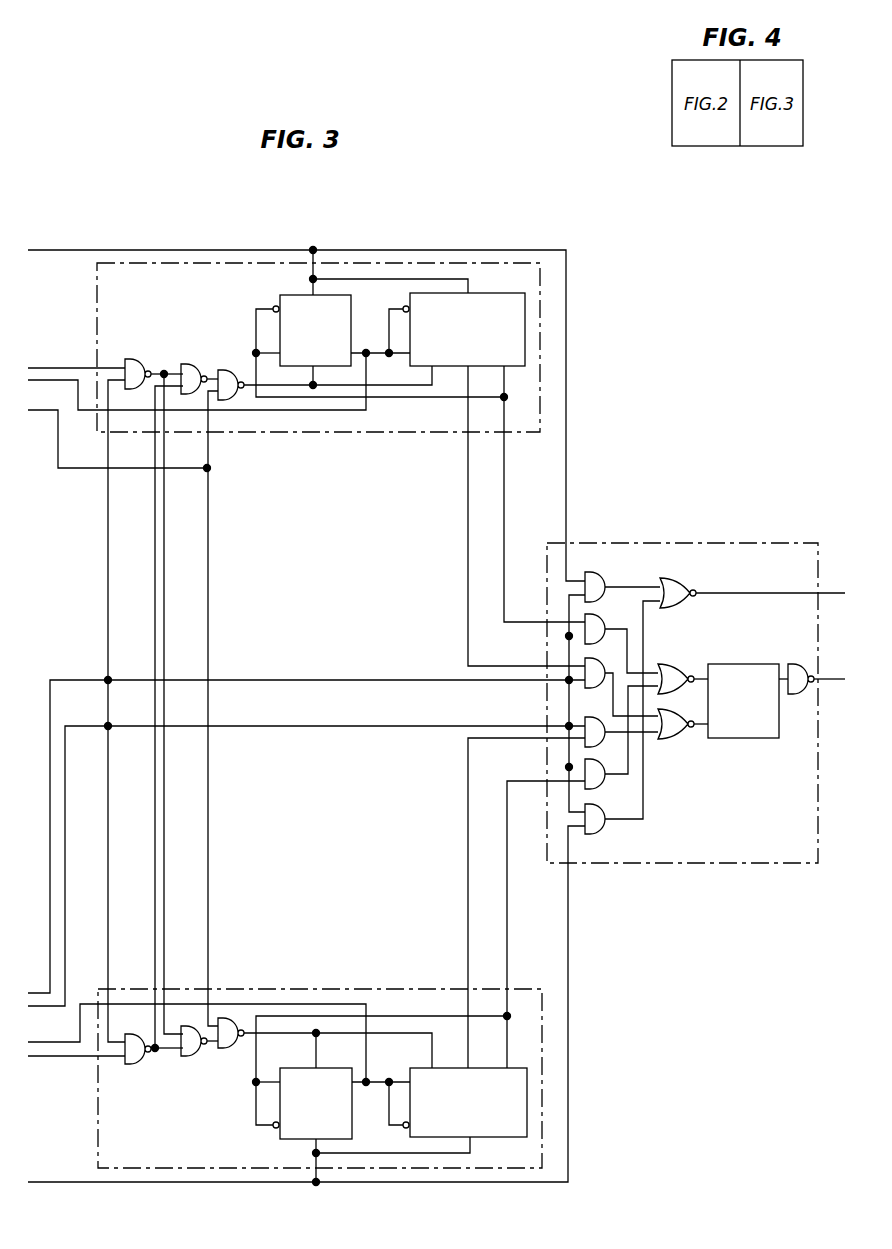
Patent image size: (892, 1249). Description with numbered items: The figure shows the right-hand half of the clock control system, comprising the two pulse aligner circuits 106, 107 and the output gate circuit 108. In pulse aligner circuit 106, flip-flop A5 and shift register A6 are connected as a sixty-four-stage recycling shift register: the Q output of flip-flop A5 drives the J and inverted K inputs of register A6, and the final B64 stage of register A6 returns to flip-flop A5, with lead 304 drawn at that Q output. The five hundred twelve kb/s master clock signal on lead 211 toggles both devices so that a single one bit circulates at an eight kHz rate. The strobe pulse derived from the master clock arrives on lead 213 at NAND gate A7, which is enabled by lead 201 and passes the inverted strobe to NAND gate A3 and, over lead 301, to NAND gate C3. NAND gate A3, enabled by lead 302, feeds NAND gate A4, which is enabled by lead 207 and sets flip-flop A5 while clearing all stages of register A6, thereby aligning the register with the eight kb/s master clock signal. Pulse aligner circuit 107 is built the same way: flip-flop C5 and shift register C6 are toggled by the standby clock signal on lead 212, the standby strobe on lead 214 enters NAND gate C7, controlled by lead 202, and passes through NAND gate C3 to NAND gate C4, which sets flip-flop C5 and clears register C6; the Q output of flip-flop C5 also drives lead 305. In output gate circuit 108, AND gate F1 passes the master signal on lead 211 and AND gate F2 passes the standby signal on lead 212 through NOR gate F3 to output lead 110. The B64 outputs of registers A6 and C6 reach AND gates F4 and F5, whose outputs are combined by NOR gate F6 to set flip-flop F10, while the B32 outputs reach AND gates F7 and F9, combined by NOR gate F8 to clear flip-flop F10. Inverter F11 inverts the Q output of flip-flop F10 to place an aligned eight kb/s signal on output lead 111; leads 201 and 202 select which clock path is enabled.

The pulse aligner circuit 106 is at (318, 347).
The pulse aligner circuit 107 is at (320, 1078).
The output gate circuit 108 is at (682, 703).
The output lead 110 is at (775, 592).
The output lead 111 is at (832, 682).
The lead 201 is at (70, 680).
The lead 202 is at (72, 726).
The lead 207 is at (65, 414).
The lead 211 is at (78, 250).
The lead 212 is at (65, 1183).
The lead 213 is at (58, 368).
The lead 214 is at (62, 1058).
The lead 301 is at (166, 562).
The lead 302 is at (155, 842).
The lead 304 is at (362, 410).
The lead 305 is at (372, 1012).
The NAND gate A3 is at (196, 364).
The NAND gate A4 is at (234, 370).
The flip-flop A5 is at (294, 295).
The shift register A6 is at (485, 293).
The NAND gate A7 is at (140, 358).
The NAND gate C3 is at (190, 1057).
The NAND gate C4 is at (230, 1049).
The flip-flop C5 is at (284, 1140).
The shift register C6 is at (493, 1137).
The NAND gate C7 is at (135, 1065).
The AND gate F1 is at (600, 575).
The AND gate F2 is at (598, 831).
The NOR gate F3 is at (672, 580).
The AND gate F4 is at (600, 618).
The AND gate F5 is at (598, 786).
The NOR gate F6 is at (672, 665).
The AND gate F7 is at (600, 661).
The NOR gate F8 is at (676, 739).
The AND gate F9 is at (598, 744).
The flip-flop F10 is at (748, 664).
The inverter F11 is at (797, 694).